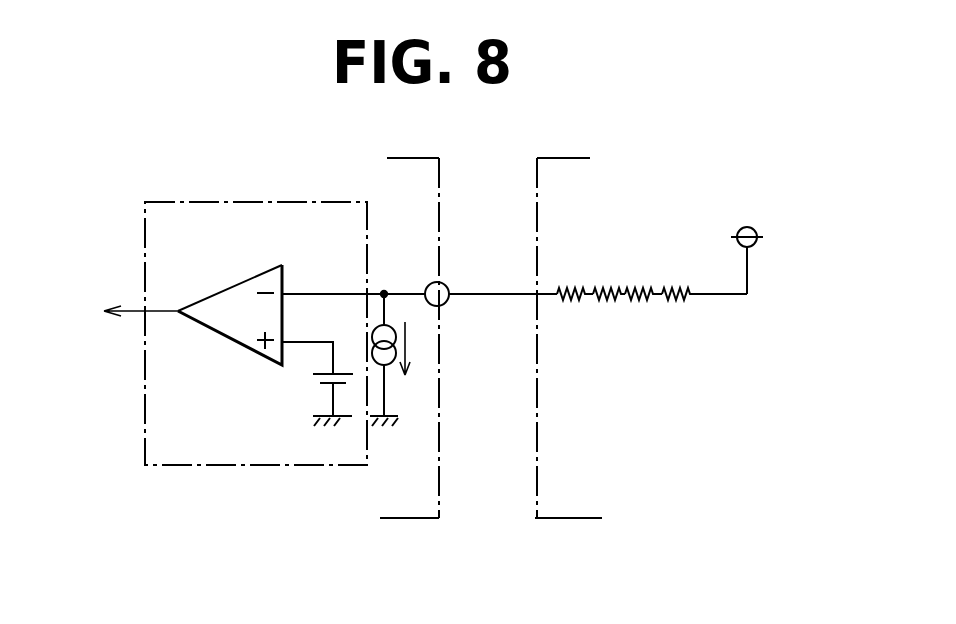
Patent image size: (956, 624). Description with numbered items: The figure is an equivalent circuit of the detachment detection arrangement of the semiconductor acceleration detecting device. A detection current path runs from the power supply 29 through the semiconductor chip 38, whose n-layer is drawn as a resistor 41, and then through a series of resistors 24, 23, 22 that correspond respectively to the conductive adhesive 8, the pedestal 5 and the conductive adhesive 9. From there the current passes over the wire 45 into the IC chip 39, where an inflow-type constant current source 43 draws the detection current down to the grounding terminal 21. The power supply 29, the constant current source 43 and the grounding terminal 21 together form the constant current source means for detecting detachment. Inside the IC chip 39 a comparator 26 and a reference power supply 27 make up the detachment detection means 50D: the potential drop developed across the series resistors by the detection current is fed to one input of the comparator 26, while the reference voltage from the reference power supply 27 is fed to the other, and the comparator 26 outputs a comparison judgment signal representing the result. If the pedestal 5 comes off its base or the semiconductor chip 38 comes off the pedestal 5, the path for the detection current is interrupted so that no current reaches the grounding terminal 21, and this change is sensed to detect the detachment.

The detachment detection means 50D is at (219, 466).
The comparator 26 is at (229, 338).
The reference power supply 27 is at (343, 392).
The constant current source 43 is at (395, 360).
The grounding terminal 21 is at (395, 425).
The IC chip 39 is at (410, 497).
The wire 45 is at (497, 292).
The semiconductor chip 38 is at (600, 371).
The conductive adhesive 8 is at (600, 371).
The pedestal 5 is at (600, 371).
The conductive adhesive 9 is at (568, 497).
The resistor 22 is at (572, 307).
The resistor 23 is at (607, 307).
The resistor 24 is at (641, 307).
The resistor 41 is at (681, 307).
The power supply 29 is at (757, 243).